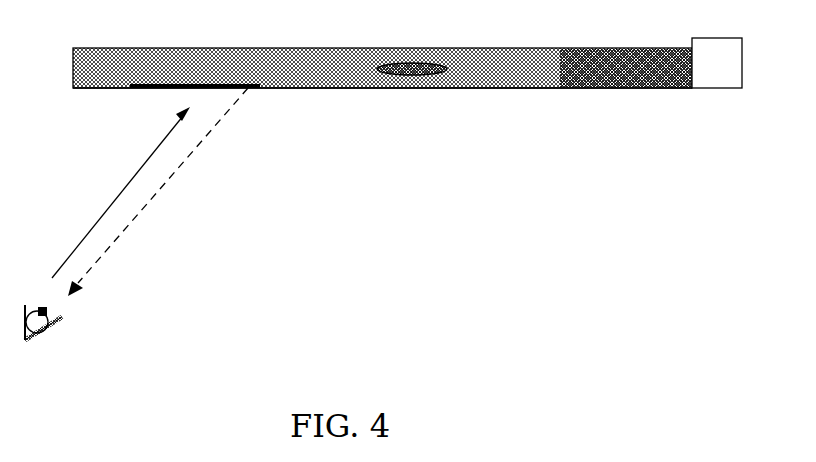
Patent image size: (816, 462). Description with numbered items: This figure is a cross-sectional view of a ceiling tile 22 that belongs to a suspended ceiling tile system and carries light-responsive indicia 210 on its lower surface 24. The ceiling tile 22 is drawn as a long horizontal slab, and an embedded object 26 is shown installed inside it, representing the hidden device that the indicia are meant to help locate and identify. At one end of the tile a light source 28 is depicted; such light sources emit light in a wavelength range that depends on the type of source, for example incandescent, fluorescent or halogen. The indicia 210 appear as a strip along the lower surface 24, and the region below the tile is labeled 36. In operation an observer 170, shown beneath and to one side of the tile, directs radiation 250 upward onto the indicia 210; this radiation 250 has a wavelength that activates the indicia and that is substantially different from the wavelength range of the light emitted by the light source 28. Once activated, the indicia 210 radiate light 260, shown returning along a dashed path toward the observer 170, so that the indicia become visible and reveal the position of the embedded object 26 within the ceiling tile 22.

The ceiling tile 22 is at (651, 79).
The lower surface 24 is at (508, 88).
The embedded object 26 is at (430, 75).
The light source 28 is at (720, 88).
The region below light guide 36 is at (557, 263).
The observer 170 is at (47, 330).
The indicia 210 is at (255, 90).
The radiation 250 is at (113, 192).
The light 260 is at (130, 227).